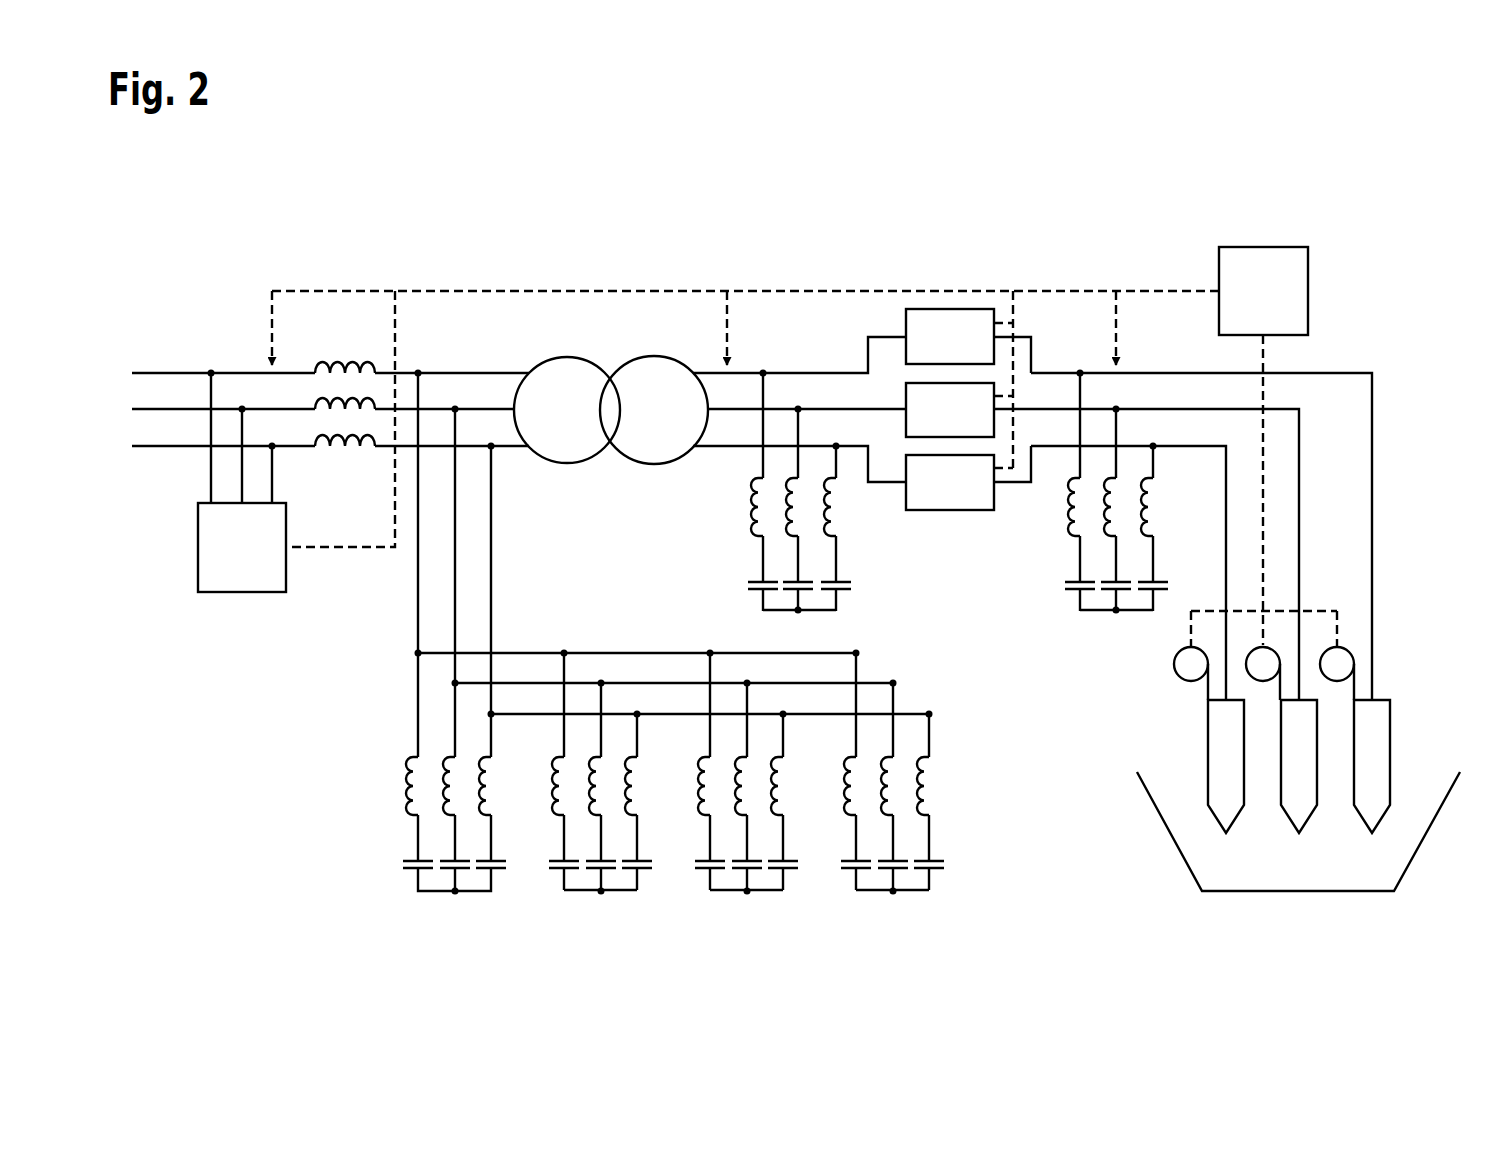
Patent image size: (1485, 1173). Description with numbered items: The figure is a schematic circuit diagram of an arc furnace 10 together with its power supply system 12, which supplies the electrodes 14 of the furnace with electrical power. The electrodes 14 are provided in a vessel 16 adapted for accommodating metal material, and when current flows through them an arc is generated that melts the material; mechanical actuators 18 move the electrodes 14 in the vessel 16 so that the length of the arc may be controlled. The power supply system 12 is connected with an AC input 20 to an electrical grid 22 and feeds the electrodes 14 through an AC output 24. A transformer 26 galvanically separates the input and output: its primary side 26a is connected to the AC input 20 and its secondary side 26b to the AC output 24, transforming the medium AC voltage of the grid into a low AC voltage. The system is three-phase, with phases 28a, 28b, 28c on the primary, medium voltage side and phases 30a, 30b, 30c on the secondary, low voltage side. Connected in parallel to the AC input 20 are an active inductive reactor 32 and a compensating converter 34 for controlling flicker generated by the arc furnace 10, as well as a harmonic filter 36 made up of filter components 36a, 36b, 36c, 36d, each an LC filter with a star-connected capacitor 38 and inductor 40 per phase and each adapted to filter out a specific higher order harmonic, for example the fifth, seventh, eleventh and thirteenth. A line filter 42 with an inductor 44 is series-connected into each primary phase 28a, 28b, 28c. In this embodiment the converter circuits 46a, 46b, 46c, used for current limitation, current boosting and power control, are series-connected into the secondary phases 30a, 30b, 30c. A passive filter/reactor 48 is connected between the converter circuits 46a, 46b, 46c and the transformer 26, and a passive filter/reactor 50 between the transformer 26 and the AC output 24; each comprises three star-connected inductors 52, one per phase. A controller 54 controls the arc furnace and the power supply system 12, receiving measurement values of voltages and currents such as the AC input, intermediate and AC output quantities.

The arc furnace 10 is at (1209, 425).
The power supply system 12 is at (930, 331).
The electrodes 14 is at (1215, 822).
The vessel 16 is at (1178, 852).
The mechanical actuators 18 is at (1200, 650).
The AC input 20 is at (330, 349).
The electrical grid 22 is at (166, 363).
The AC output 24 is at (1311, 364).
The transformer 26 is at (615, 356).
The primary side 26a is at (602, 363).
The secondary side 26b is at (688, 363).
The phase 28a is at (428, 372).
The phase 28b is at (455, 407).
The phase 28c is at (492, 443).
The phase 30a is at (753, 372).
The phase 30b is at (782, 407).
The phase 30c is at (817, 444).
The active inductive reactor 32 is at (683, 480).
The compensating converter 34 is at (262, 592).
The harmonic filter 36 is at (546, 818).
The filter component 36a is at (360, 870).
The filter component 36b is at (591, 898).
The filter component 36c is at (737, 898).
The filter component 36d is at (883, 898).
The capacitor 38 is at (360, 792).
The inductor 40 is at (360, 866).
The line filter 42 is at (340, 387).
The inductor 44 is at (333, 450).
The converter circuit 46a is at (932, 309).
The converter circuit 46b is at (929, 383).
The converter circuit 46c is at (948, 455).
The passive filter/reactor 48 is at (826, 618).
The passive filter/reactor 50 is at (1076, 618).
The inductor 52 is at (830, 530).
The controller 54 is at (1308, 291).